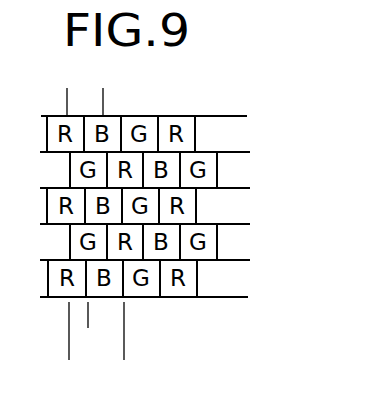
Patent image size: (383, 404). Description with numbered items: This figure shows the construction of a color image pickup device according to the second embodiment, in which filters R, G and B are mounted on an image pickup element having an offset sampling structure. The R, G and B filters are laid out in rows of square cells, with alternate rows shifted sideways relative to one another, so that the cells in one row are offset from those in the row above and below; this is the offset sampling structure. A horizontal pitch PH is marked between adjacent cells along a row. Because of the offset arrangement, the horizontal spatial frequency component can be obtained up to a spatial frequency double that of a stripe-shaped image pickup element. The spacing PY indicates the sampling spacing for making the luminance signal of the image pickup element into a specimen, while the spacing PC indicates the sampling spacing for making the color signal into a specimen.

The horizontal pitch of pixels PH is at (103, 97).
The spacing for making the luminance signal into a specimen PY is at (106, 321).
The spacing for making the color signal into a specimen PC is at (124, 355).